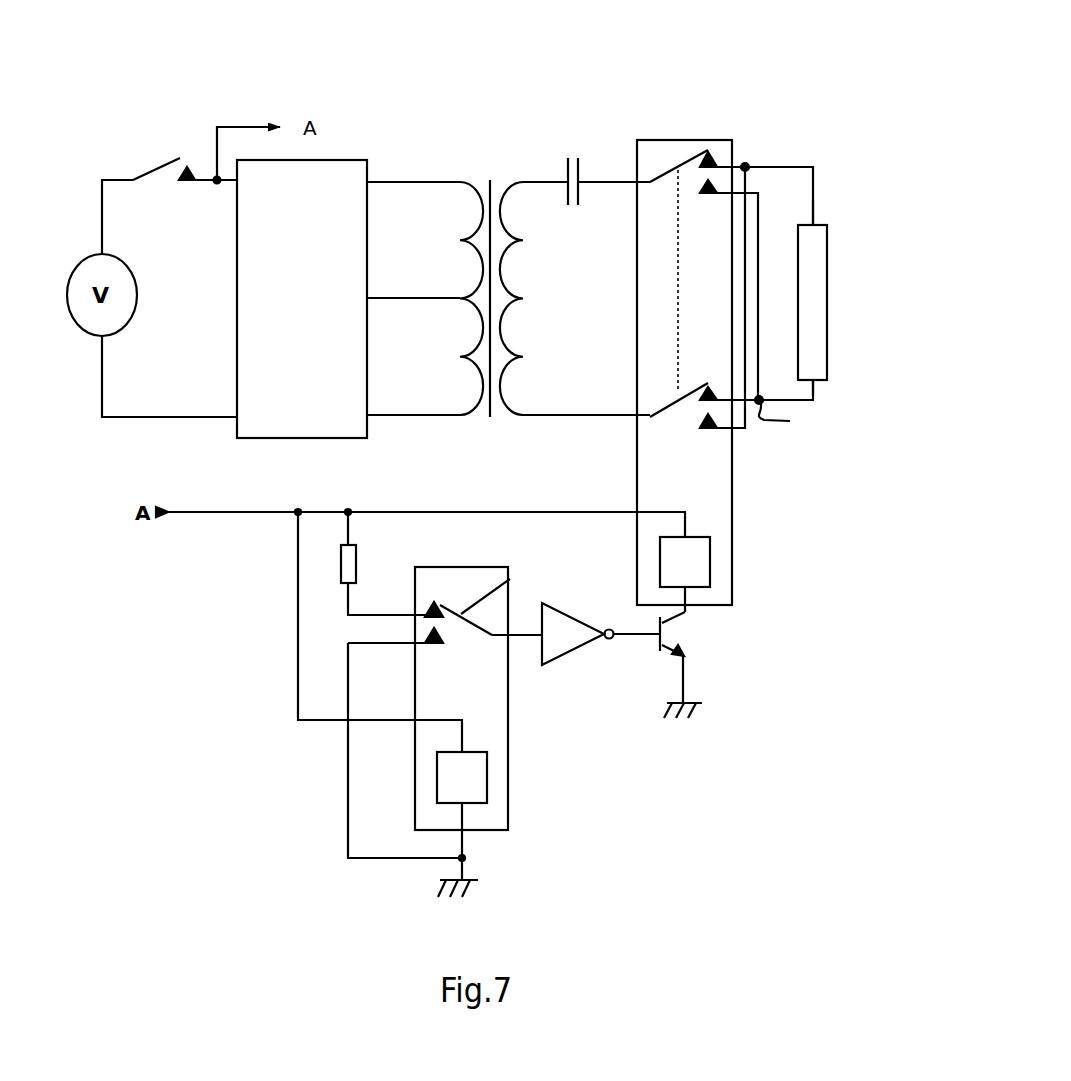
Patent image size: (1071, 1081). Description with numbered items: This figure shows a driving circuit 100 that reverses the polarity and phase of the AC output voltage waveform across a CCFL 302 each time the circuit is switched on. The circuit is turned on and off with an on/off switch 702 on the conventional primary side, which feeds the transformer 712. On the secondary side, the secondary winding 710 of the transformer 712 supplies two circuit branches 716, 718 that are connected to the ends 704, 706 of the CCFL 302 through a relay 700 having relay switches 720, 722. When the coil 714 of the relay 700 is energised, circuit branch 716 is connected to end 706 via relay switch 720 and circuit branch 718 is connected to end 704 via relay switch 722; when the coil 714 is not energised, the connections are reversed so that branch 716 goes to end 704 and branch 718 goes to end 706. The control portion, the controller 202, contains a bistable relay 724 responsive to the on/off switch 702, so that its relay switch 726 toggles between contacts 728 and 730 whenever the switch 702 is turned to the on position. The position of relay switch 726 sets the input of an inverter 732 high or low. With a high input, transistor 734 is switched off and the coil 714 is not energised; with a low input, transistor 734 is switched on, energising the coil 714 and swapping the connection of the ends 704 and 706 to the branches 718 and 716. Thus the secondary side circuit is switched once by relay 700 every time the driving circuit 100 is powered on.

The driving circuit 100 is at (533, 54).
The on/off switch 702 is at (145, 162).
The transformer 712 is at (475, 162).
The secondary winding 710 is at (538, 285).
The circuit branch 716 is at (607, 182).
The circuit branch 718 is at (595, 415).
The relay switch 720 is at (696, 136).
The relay switch 722 is at (667, 433).
The end of CCFL 704 is at (838, 216).
The CCFL 302 is at (827, 298).
The end of CCFL 706 is at (846, 378).
The relay 700 is at (735, 512).
The coil 714 is at (710, 562).
The transistor 734 is at (705, 633).
The inverter 732 is at (580, 647).
The relay switch 726 is at (510, 580).
The contact 730 is at (434, 600).
The contact 728 is at (434, 645).
The bistable relay 724 is at (510, 740).
The controller 202 is at (263, 778).